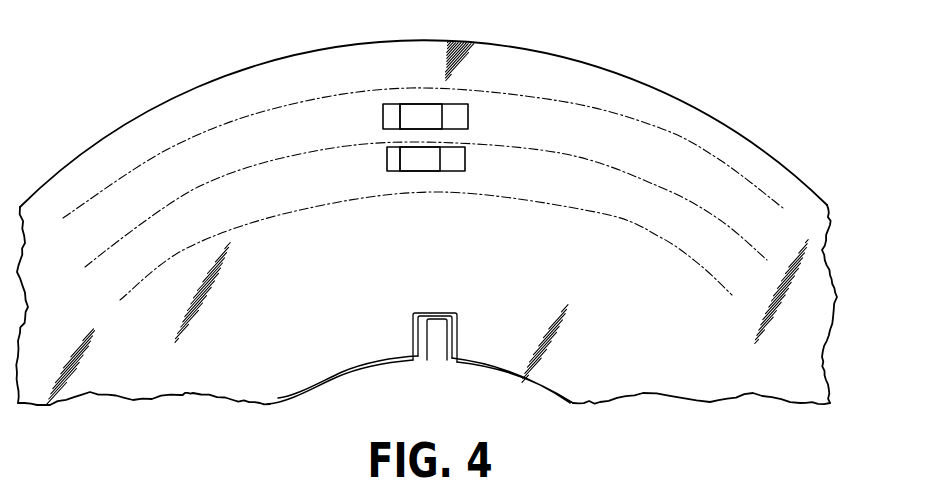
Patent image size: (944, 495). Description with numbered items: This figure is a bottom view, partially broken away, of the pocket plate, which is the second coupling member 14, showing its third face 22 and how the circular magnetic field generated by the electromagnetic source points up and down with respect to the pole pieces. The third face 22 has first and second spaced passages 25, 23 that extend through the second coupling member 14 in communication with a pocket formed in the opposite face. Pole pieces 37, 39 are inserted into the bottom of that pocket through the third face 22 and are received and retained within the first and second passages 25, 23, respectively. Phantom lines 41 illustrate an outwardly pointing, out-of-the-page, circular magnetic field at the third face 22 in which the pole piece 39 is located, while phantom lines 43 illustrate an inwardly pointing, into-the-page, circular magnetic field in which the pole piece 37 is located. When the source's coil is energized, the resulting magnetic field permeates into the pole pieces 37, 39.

The second coupling member 14 is at (808, 184).
The third face 22 is at (685, 373).
The second passage 23 is at (383, 112).
The first passage 25 is at (395, 163).
The pole piece 37 is at (430, 159).
The pole piece 39 is at (422, 117).
The phantom lines 41 is at (692, 146).
The phantom lines 43 is at (703, 208).